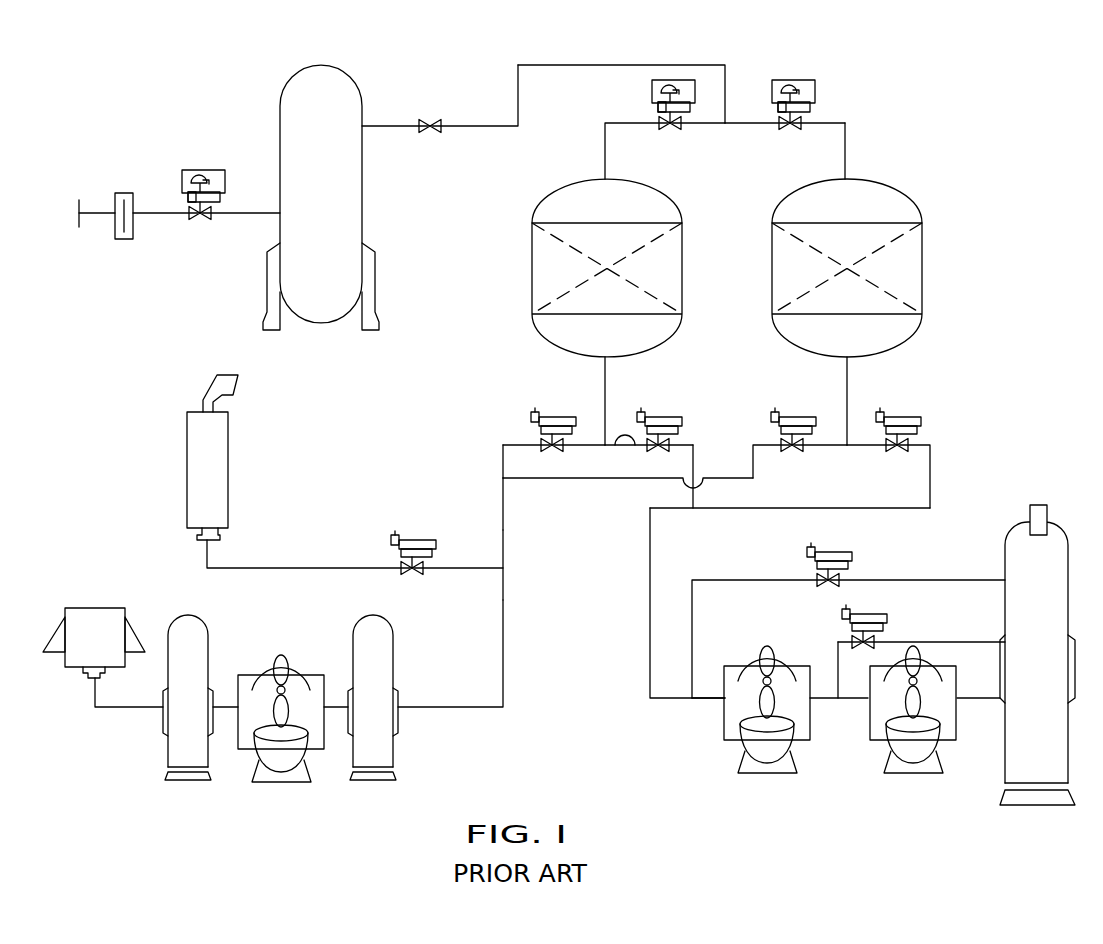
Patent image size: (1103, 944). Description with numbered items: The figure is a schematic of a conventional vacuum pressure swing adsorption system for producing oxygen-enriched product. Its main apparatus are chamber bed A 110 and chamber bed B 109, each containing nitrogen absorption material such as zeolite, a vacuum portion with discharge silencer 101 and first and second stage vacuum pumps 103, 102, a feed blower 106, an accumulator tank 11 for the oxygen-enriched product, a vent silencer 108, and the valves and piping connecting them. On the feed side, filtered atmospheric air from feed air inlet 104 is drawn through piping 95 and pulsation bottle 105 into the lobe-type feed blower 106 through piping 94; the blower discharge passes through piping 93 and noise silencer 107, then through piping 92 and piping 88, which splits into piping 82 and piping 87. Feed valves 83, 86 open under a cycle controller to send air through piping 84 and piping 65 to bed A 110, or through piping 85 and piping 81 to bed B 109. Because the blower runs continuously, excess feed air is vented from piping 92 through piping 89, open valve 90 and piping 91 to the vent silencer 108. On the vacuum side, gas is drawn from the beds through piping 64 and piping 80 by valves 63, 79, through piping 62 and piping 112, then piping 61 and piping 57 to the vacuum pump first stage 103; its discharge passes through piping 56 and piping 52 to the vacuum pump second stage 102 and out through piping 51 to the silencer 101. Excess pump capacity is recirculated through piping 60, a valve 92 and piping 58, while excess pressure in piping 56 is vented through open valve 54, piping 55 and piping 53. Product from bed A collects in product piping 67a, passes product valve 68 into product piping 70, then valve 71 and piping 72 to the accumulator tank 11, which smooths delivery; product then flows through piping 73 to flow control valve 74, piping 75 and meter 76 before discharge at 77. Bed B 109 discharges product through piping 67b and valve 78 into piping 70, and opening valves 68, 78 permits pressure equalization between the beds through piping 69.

The accumulator tank 11 is at (357, 88).
The product piping 70 is at (657, 65).
The valve 78 is at (652, 95).
The product valve 68 is at (808, 79).
The piping 72 is at (384, 125).
The valve 71 is at (433, 120).
The piping 67b is at (605, 142).
The piping 69 is at (736, 125).
The product piping 67a is at (845, 138).
The bed B 109 is at (625, 185).
The bed A 110 is at (865, 185).
The meter 76 is at (124, 192).
The discharge 77 is at (89, 212).
The piping 75 is at (148, 212).
The flow control valve 74 is at (210, 170).
The piping 73 is at (239, 212).
The feed valve 86 is at (548, 400).
The piping 85 is at (583, 440).
The piping 81 is at (607, 392).
The valve 79 is at (662, 417).
The piping 112 is at (700, 432).
The piping 80 is at (636, 452).
The feed valve 83 is at (789, 412).
The piping 65 is at (848, 395).
The valve 63 is at (903, 425).
The piping 84 is at (816, 447).
The piping 64 is at (862, 447).
The piping 62 is at (740, 508).
The piping 61 is at (650, 650).
The piping 87 is at (503, 461).
The piping 88 is at (503, 506).
The piping 89 is at (478, 568).
The piping 82 is at (577, 479).
The valve 90 is at (414, 540).
The piping 91 is at (298, 567).
The vent silencer 108 is at (232, 442).
The feed air inlet 104 is at (105, 607).
The piping 95 is at (125, 707).
The pulsation bottle 105 is at (203, 618).
The piping 94 is at (220, 700).
The feed blower 106 is at (272, 655).
The piping 93 is at (338, 700).
The noise silencer 107 is at (392, 618).
The piping / valve 92 is at (503, 605).
The piping 58 is at (731, 580).
The piping 60 is at (943, 580).
The piping 57 is at (708, 698).
The vacuum pump first stage 103 is at (770, 778).
The piping 56 is at (825, 700).
The piping 52 is at (838, 690).
The piping 53 is at (838, 640).
The valve 54 is at (870, 618).
The piping 55 is at (938, 642).
The vacuum pump second stage 102 is at (890, 762).
The piping 51 is at (965, 698).
The discharge silencer 101 is at (1005, 548).